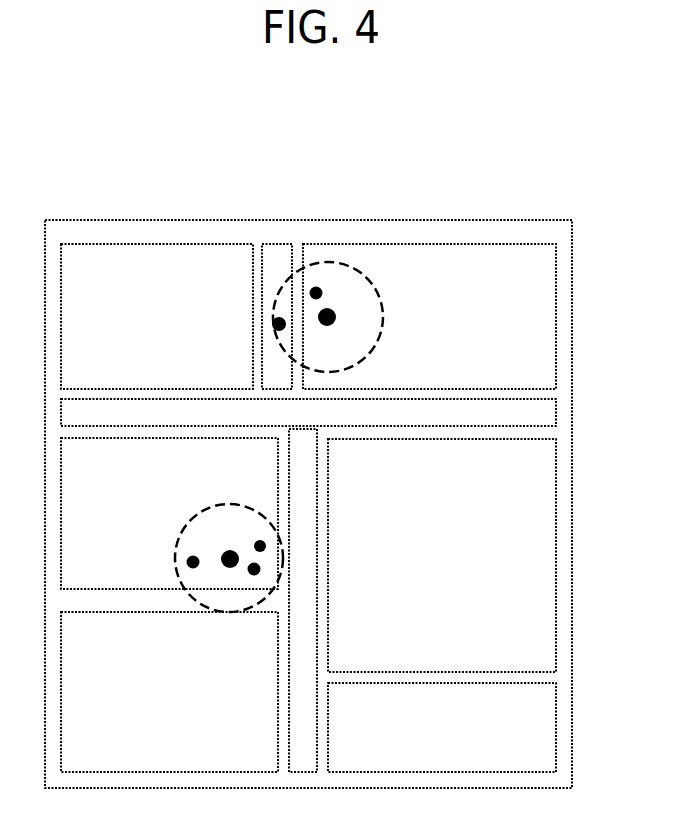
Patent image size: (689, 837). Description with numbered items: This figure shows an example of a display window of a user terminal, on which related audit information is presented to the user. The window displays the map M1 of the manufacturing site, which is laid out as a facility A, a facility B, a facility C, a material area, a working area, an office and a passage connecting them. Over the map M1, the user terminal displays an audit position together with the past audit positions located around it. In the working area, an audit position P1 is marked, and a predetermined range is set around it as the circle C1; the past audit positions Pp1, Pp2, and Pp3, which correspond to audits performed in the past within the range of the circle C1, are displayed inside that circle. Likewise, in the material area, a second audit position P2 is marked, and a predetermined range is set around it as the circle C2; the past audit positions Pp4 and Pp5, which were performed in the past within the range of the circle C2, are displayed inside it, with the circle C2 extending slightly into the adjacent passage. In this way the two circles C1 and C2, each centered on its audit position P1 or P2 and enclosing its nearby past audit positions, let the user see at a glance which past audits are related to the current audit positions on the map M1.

The map M1 is at (480, 172).
The circle C1 is at (190, 520).
The circle C2 is at (385, 317).
The audit position P1 is at (233, 550).
The audit position P2 is at (333, 311).
The past audit position Pp1 is at (266, 545).
The past audit position Pp2 is at (187, 562).
The past audit position Pp3 is at (253, 574).
The past audit position Pp4 is at (316, 287).
The past audit position Pp5 is at (279, 318).